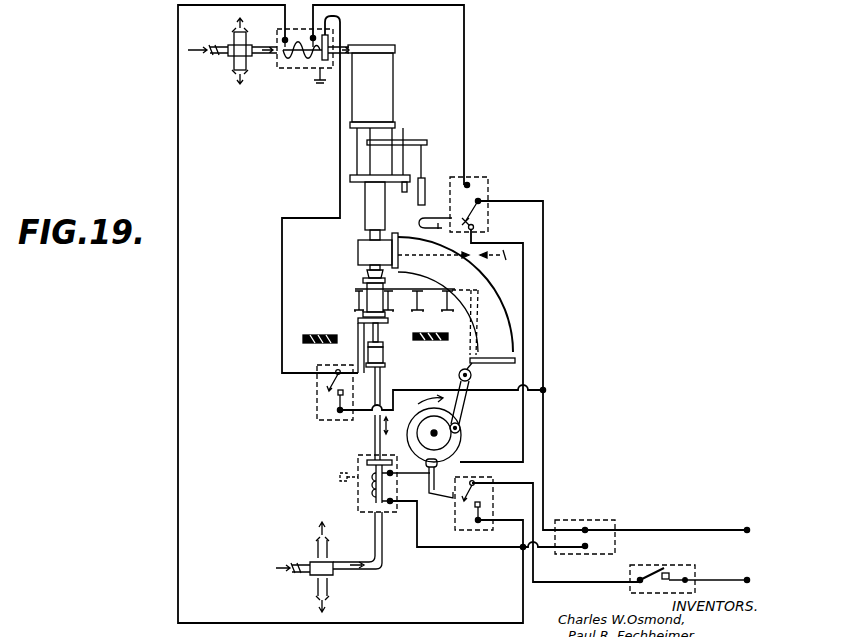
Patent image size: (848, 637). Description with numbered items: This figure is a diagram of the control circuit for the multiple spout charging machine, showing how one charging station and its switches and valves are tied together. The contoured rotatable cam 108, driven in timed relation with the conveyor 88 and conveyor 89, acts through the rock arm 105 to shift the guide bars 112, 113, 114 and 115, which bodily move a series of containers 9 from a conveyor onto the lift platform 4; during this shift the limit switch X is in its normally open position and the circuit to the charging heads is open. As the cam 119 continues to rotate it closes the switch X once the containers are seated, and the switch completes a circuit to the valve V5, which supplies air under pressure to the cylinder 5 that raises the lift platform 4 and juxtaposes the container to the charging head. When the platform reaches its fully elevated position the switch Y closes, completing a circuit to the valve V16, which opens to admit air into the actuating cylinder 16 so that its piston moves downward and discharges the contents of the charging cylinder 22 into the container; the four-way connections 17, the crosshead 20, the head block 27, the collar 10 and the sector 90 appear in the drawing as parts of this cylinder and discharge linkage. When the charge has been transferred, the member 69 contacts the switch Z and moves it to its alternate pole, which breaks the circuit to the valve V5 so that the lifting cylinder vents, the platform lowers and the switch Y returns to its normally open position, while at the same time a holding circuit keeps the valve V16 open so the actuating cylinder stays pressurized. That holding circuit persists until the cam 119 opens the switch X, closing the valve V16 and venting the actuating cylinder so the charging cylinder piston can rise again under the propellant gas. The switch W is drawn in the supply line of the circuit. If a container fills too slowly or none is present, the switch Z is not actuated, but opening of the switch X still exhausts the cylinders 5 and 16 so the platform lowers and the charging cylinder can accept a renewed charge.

The four-way air valve 17 is at (213, 46).
The valve V16 is at (297, 70).
The actuating cylinder 16 is at (395, 64).
The crosshead 20 is at (373, 135).
The member 69 is at (427, 183).
The switch Z is at (481, 176).
The charging cylinder 22 is at (367, 221).
The head block 27 is at (360, 254).
The sector cam 90 is at (479, 279).
The rock arm 105 is at (473, 339).
The collar 10 is at (369, 268).
The container 9 is at (364, 284).
The shifting guide bar 112 is at (353, 304).
The shifting guide bar 113 is at (393, 312).
The shifting guide bar 114 is at (420, 311).
The shifting guide bar 115 is at (446, 311).
The lift platform 4 is at (358, 320).
The conveyor 88 is at (320, 344).
The conveyor 89 is at (432, 341).
The cylinder 5 is at (386, 362).
The switch Y is at (317, 396).
The cam 108 is at (441, 438).
The cam 119 is at (461, 428).
The valve V5 is at (358, 457).
The limit switch X is at (455, 525).
The switch W is at (690, 567).